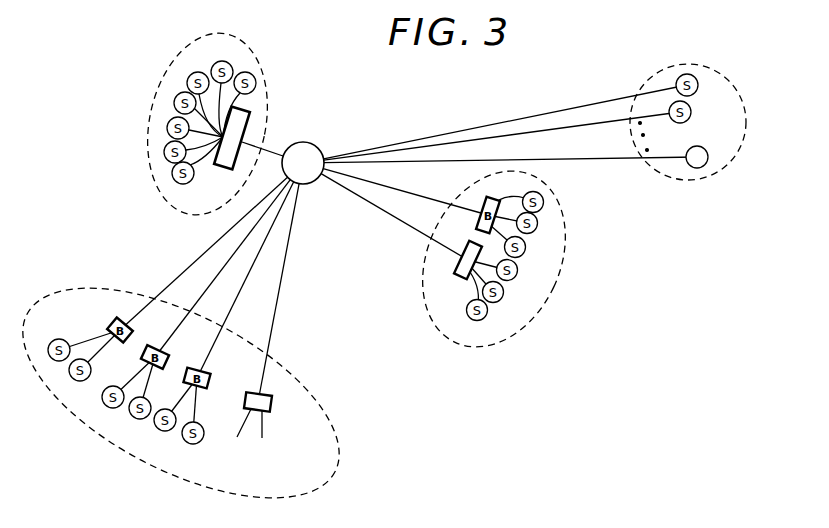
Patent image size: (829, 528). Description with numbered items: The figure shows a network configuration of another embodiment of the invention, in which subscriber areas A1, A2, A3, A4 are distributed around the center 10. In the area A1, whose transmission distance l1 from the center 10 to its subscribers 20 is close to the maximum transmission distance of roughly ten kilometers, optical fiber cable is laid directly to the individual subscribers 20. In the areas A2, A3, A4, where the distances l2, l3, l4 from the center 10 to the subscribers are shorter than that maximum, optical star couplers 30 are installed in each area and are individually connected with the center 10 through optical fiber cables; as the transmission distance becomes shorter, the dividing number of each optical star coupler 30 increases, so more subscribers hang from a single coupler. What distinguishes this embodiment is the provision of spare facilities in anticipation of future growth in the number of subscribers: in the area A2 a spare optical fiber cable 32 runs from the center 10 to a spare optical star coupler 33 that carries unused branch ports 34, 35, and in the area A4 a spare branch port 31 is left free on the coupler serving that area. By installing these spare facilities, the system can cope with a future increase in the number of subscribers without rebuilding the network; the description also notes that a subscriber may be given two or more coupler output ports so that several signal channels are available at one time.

The center 10 is at (311, 143).
The subscribers 20 is at (693, 168).
The optical star coupler 30 is at (459, 273).
The spare branch port 31 is at (207, 175).
The spare optical fiber cable 32 is at (280, 299).
The optical star coupler 33 is at (271, 405).
The branch port 34 is at (238, 437).
The branch port 35 is at (264, 431).
The subscriber area A1 is at (688, 105).
The subscriber area A2 is at (187, 386).
The subscriber area A3 is at (493, 259).
The subscriber area A4 is at (214, 124).
The transmission distance l1 is at (510, 124).
The transmission distance l2 is at (207, 277).
The transmission distance l3 is at (404, 214).
The transmission distance l4 is at (262, 141).